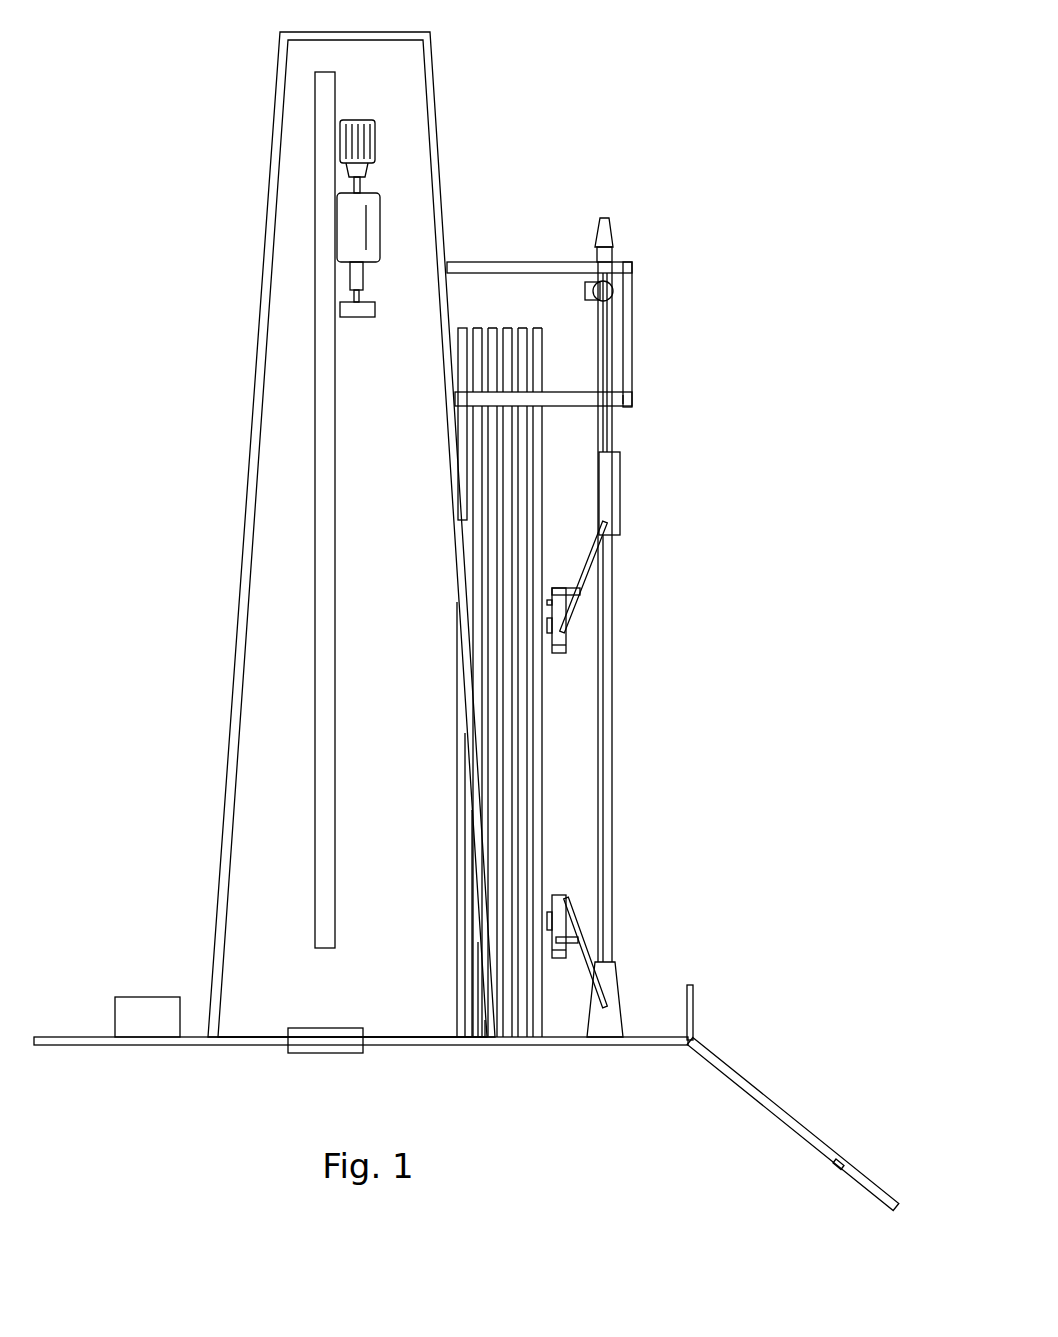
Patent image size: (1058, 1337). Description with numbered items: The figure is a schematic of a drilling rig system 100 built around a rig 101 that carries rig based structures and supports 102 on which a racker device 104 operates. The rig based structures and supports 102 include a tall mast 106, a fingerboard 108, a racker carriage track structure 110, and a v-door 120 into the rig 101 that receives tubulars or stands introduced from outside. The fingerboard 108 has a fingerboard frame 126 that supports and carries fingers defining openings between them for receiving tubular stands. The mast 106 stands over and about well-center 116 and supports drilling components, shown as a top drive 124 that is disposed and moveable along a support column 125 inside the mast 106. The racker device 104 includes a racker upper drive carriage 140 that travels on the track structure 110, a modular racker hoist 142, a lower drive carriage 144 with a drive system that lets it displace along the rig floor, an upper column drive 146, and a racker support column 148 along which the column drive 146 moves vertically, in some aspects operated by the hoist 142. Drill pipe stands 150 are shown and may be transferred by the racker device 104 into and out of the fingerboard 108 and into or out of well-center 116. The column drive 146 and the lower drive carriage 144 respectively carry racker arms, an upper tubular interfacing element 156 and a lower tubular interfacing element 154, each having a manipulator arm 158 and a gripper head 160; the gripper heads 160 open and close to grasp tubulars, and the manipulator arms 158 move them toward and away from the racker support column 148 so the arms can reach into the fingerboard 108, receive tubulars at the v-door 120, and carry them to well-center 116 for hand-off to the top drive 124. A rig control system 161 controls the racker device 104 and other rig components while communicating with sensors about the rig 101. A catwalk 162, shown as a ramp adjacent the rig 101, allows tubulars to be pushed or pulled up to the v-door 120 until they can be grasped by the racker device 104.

The system 100 is at (600, 146).
The rig 101 is at (75, 1035).
The rig based structures and supports 102 is at (586, 308).
The racker device 104 is at (633, 677).
The mast 106 is at (243, 532).
The fingerboard 108 is at (640, 397).
The racker carriage track structure 110 is at (549, 258).
The well-center 116 is at (325, 1055).
The v-door 120 is at (695, 999).
The top drive 124 is at (382, 236).
The support column 125 is at (336, 393).
The fingerboard frame 126 is at (625, 402).
The racker upper drive carriage 140 is at (614, 232).
The modular racker hoist 142 is at (613, 296).
The lower drive carriage 144 is at (619, 985).
The upper column drive 146 is at (621, 490).
The racker support column 148 is at (613, 746).
The drill pipe stands 150 is at (487, 318).
The lower tubular interfacing element 154 is at (559, 888).
The upper tubular interfacing element 156 is at (559, 660).
The manipulator arm 158 is at (585, 568).
The gripper head 160 is at (567, 633).
The rig control system 161 is at (147, 997).
The catwalk 162 is at (775, 1102).